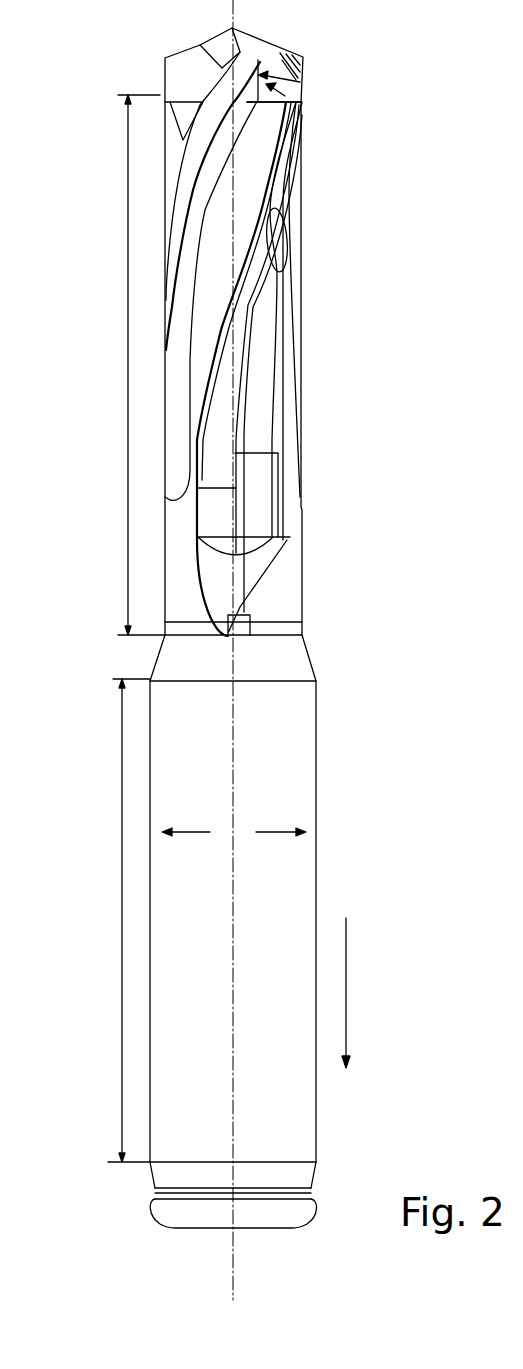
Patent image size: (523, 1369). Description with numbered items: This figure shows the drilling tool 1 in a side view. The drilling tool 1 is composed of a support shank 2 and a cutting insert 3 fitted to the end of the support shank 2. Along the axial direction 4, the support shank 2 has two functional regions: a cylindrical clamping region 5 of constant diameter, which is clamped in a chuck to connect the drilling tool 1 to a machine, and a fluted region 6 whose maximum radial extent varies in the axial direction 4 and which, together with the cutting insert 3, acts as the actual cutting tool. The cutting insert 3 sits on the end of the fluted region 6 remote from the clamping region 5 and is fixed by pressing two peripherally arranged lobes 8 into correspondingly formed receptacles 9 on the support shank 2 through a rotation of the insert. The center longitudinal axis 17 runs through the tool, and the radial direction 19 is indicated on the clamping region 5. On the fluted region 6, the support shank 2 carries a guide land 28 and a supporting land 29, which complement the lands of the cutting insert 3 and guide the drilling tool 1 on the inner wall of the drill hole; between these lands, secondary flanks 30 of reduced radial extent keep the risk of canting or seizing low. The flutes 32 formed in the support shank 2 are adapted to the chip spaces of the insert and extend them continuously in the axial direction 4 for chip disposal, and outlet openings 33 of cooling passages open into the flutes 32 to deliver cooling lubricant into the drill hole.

The drilling tool 1 is at (386, 694).
The support shank 2 is at (304, 313).
The cutting insert 3 is at (306, 100).
The axial direction 4 is at (347, 965).
The clamping region 5 is at (120, 801).
The fluted region 6 is at (127, 375).
The lobes 8 is at (300, 82).
The receptacles 9 is at (302, 52).
The center longitudinal axis 17 is at (234, 1236).
The radial direction 19 is at (193, 833).
The guide land 28 is at (198, 177).
The supporting land 29 is at (298, 153).
The secondary flanks 30 is at (170, 183).
The flutes 32 is at (265, 374).
The outlet openings 33 is at (279, 246).